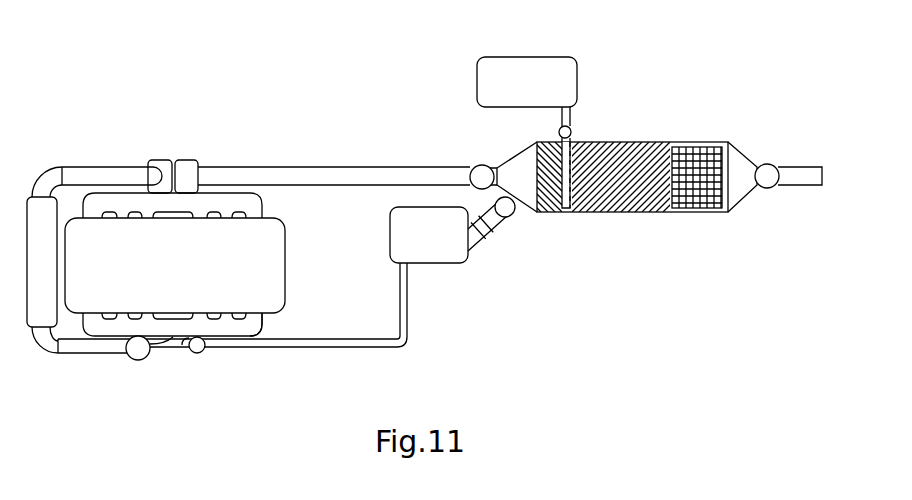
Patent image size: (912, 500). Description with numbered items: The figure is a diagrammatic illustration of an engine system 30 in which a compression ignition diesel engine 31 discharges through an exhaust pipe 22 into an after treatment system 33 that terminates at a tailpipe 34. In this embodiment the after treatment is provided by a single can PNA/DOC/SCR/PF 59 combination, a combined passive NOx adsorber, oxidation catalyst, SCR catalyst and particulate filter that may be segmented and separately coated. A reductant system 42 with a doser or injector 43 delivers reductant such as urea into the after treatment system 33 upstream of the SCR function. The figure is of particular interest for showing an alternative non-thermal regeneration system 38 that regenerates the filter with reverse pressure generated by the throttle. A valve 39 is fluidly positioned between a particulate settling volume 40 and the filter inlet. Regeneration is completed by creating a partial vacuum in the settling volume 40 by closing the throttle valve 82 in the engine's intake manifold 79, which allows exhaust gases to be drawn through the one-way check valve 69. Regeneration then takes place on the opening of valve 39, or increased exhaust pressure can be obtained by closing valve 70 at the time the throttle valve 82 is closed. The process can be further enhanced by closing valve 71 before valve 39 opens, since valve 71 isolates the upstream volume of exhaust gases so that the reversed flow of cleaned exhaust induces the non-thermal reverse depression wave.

The engine system 30 is at (327, 76).
The exhaust pipe 22 is at (292, 156).
The compression ignition diesel engine 31 is at (73, 328).
The after treatment system 33 is at (503, 312).
The tailpipe 34 is at (797, 166).
The non-thermal particle trap regeneration system 38 is at (514, 270).
The valve 39 is at (512, 217).
The particulate settling volume 40 is at (418, 273).
The reductant system 42 is at (521, 48).
The doser or injector 43 is at (572, 146).
The single can PNA/DOC/SCR/PF combination 59 is at (595, 225).
The one-way check valve 69 is at (211, 352).
The valve 70 is at (769, 188).
The valve 71 is at (476, 165).
The intake manifold 79 is at (240, 327).
The throttle valve 82 is at (131, 367).